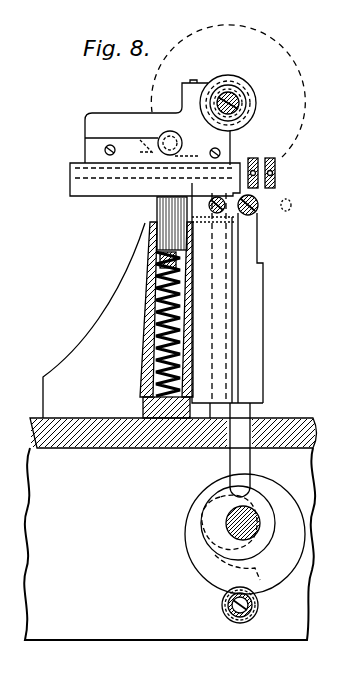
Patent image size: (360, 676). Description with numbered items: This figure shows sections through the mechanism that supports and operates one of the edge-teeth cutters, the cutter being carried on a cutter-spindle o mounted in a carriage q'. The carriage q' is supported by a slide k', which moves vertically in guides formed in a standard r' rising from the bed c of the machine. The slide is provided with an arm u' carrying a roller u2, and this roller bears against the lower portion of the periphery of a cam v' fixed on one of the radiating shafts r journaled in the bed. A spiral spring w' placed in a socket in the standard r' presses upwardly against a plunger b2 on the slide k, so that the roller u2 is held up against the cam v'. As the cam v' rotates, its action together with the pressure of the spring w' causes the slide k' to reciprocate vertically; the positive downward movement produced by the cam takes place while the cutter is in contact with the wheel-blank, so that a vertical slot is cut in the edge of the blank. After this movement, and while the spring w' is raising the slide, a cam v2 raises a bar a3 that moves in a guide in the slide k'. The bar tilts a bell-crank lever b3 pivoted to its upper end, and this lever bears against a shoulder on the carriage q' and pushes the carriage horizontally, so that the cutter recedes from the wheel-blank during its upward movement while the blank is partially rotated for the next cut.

The carriage q' is at (157, 122).
The cutter-spindle o is at (228, 91).
The slide k is at (155, 180).
The plunger b2 is at (158, 207).
The spiral spring w' is at (144, 320).
The slide k' is at (227, 300).
The bar a3 is at (250, 248).
The bell-crank lever b3 is at (260, 198).
The standard r' is at (94, 320).
The bed c is at (300, 422).
The arm u' is at (245, 531).
The radiating shaft r is at (247, 523).
The cam v2 is at (229, 527).
The cam v' is at (247, 567).
The roller u2 is at (258, 612).